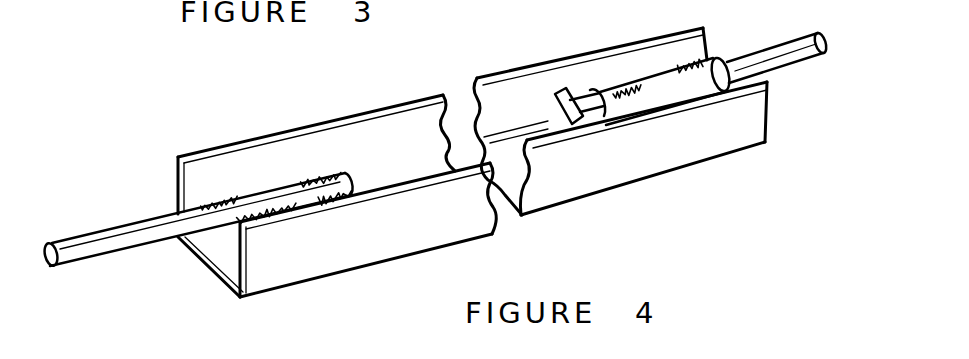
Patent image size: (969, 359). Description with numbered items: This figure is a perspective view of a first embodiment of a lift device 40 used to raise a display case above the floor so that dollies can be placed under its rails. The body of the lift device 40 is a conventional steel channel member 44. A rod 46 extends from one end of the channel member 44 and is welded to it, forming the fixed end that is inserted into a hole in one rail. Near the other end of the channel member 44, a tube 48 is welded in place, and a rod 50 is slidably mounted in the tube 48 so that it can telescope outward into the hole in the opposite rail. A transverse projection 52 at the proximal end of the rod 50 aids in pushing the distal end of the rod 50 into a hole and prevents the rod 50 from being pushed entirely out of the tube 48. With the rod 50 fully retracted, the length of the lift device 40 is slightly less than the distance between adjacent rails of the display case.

The lift device 40 is at (207, 121).
The channel member 44 is at (397, 110).
The rod 46 is at (140, 228).
The tube 48 is at (655, 97).
The rod 50 is at (797, 50).
The transverse projection 52 is at (552, 115).